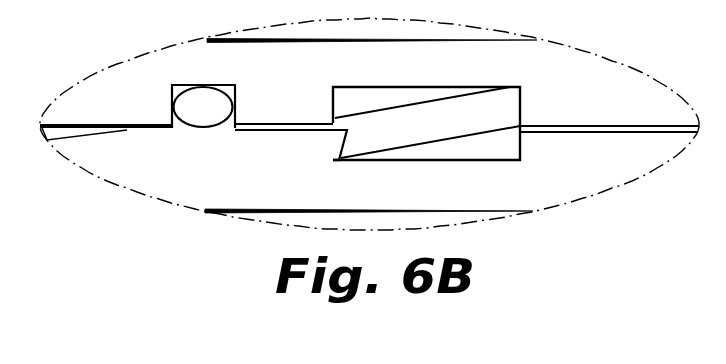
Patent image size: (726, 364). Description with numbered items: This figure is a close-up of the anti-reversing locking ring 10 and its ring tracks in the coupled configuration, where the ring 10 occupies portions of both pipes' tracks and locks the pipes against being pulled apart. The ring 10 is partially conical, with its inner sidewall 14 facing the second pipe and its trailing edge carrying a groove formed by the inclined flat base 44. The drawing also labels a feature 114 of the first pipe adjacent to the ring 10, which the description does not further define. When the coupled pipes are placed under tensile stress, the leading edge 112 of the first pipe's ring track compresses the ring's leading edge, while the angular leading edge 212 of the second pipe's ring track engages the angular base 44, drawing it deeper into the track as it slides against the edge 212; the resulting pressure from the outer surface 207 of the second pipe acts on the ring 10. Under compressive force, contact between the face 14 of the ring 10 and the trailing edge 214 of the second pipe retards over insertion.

The anti-reversing locking ring 10 is at (415, 100).
The inner sidewall 14 is at (442, 141).
The inclined flat base 44 is at (339, 143).
The leading edge of first annular ring track 112 is at (521, 105).
The guide strip 114 is at (331, 100).
The outer surface of second pipe 207 is at (259, 131).
The leading edge of opposing ring track 212 is at (340, 134).
The trailing edge of second pipe 214 is at (521, 142).